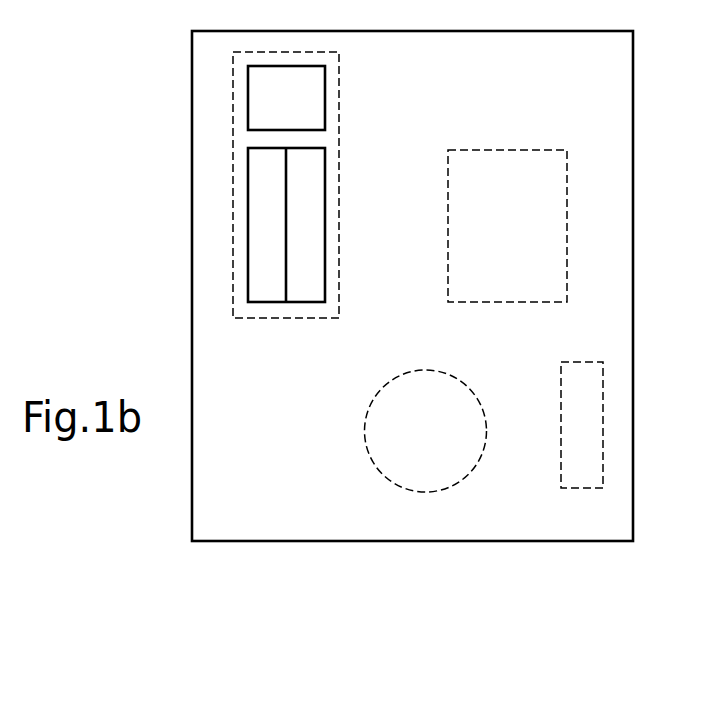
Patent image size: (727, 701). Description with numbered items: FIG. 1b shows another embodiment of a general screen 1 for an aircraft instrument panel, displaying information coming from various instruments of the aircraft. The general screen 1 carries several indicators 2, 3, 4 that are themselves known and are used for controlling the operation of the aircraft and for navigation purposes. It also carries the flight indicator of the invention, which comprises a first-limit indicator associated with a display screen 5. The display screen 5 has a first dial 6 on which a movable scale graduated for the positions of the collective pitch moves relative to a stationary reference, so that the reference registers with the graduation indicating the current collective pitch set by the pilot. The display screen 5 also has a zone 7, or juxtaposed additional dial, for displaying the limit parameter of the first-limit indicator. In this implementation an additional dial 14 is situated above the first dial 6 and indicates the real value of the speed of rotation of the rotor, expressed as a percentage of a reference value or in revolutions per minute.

The general screen 1 is at (472, 551).
The indicator 2 is at (374, 478).
The indicator 3 is at (583, 202).
The indicator 4 is at (609, 402).
The display screen 5 is at (224, 194).
The first dial 6 is at (310, 185).
The zone 7 is at (268, 292).
The additional dial 14 is at (312, 97).